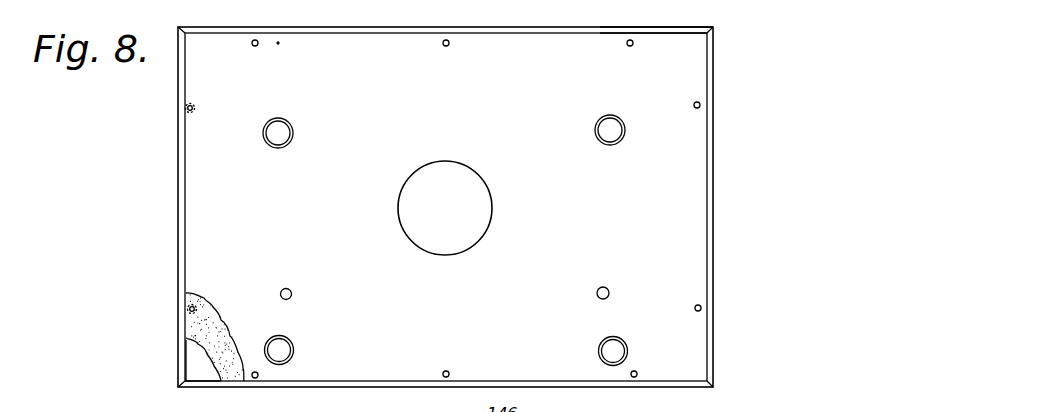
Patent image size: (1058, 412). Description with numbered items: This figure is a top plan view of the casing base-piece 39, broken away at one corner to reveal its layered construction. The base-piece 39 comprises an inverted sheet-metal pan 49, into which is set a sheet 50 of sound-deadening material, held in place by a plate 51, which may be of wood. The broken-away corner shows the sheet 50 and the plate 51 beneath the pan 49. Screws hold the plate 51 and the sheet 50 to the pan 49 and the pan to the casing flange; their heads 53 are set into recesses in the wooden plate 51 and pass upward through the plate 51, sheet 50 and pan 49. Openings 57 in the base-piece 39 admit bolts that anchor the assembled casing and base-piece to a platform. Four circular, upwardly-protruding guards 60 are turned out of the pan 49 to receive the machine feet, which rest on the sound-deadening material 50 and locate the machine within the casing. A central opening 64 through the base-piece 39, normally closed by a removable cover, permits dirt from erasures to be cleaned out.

The base-piece 39 is at (176, 172).
The inverted sheet-metal pan 49 is at (651, 40).
The sheet of sound-deadening material 50 is at (194, 338).
The plate 51 is at (190, 370).
The screw heads 53 is at (185, 108).
The openings 57 is at (291, 291).
The circular upwardly-protruding guards 60 is at (292, 127).
The opening 64 is at (481, 157).